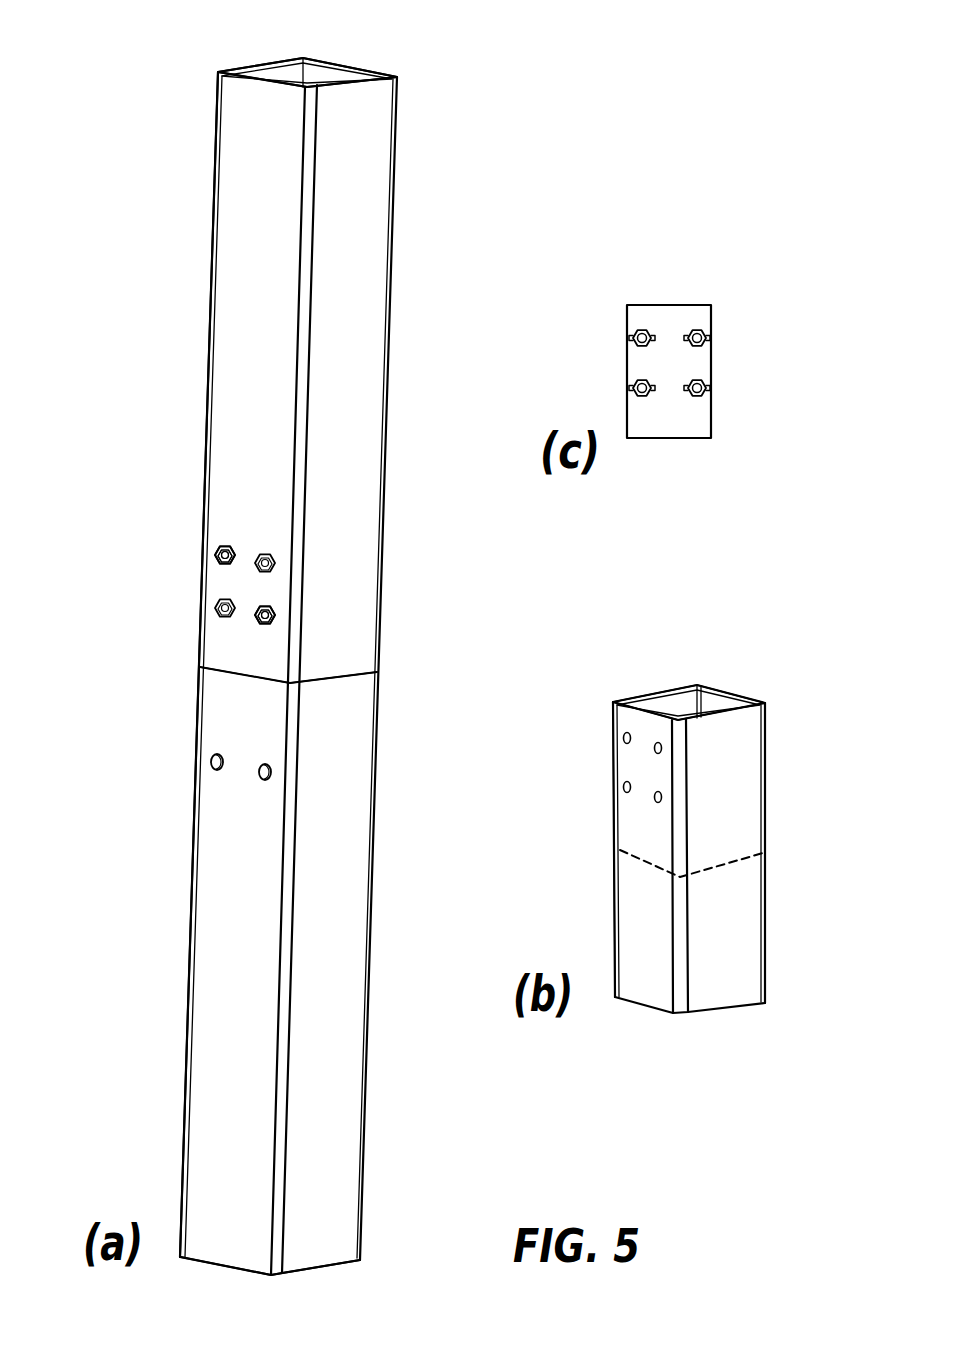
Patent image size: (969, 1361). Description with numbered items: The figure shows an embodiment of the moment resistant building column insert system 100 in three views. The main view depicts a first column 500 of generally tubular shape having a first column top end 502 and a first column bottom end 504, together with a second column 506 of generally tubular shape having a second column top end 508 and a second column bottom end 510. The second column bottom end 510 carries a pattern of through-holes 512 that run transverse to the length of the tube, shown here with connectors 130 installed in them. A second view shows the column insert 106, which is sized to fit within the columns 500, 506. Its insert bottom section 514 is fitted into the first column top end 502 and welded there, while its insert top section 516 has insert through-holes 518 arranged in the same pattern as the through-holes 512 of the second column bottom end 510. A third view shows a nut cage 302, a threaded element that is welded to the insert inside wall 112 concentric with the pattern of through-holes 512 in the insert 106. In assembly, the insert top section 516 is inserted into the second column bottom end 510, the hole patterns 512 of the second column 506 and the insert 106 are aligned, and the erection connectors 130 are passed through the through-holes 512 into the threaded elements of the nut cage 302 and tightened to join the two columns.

The moment resistant building column insert system 100 is at (258, 645).
The first column 500 is at (193, 902).
The first column top end 502 is at (338, 682).
The first column bottom end 504 is at (308, 1266).
The second column 506 is at (210, 335).
The second column top end 508 is at (238, 83).
The second column bottom end 510 is at (352, 673).
The through-holes 512 is at (187, 637).
The insert through-holes 518 is at (213, 758).
The connectors 130 is at (280, 562).
The nut cage 302 is at (690, 280).
The column insert 106 is at (650, 810).
The insert inside wall 112 is at (710, 688).
The insert bottom section 514 is at (613, 868).
The insert top section 516 is at (613, 818).